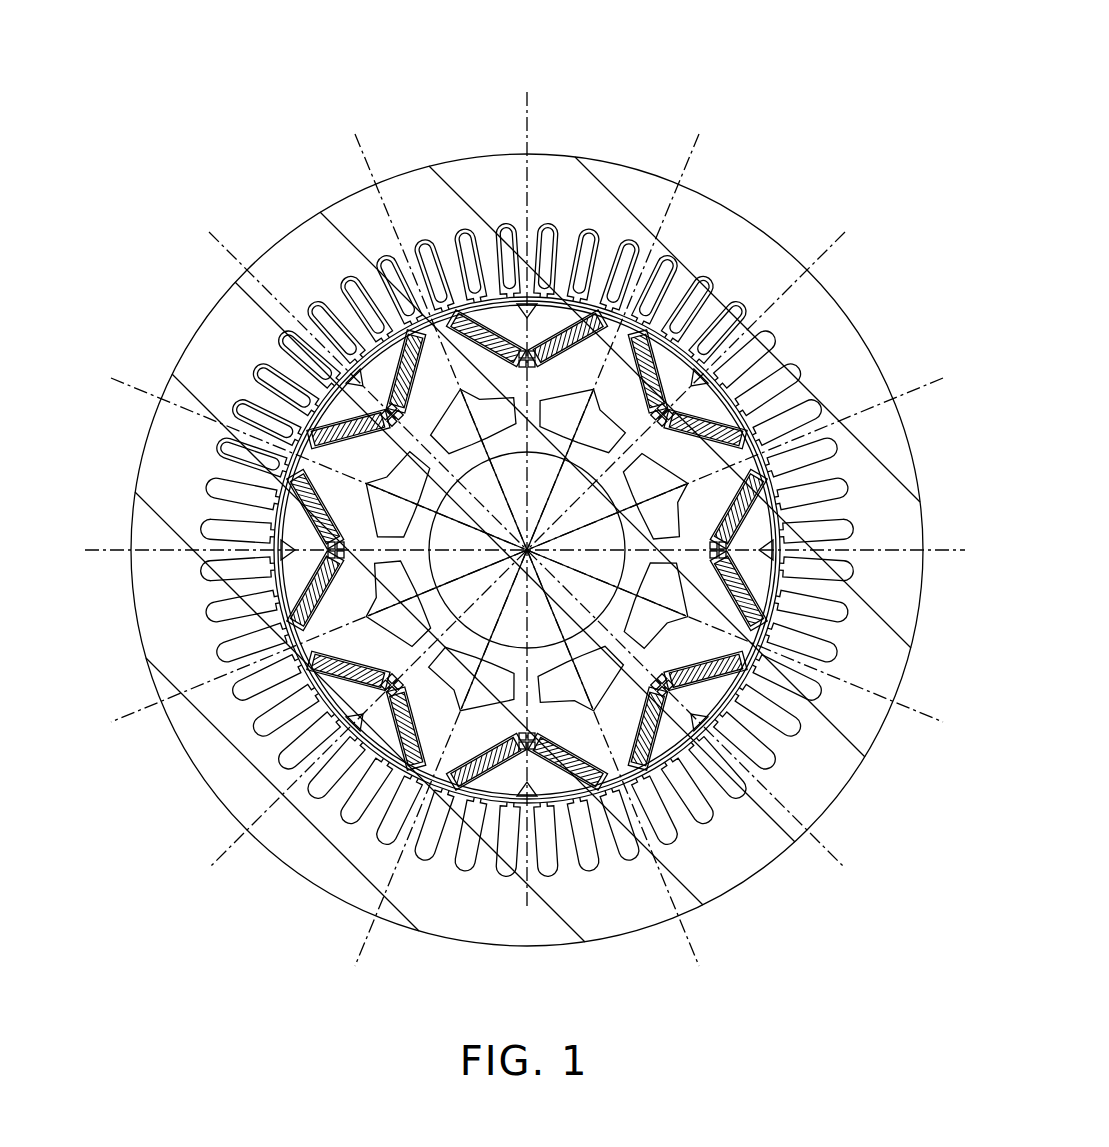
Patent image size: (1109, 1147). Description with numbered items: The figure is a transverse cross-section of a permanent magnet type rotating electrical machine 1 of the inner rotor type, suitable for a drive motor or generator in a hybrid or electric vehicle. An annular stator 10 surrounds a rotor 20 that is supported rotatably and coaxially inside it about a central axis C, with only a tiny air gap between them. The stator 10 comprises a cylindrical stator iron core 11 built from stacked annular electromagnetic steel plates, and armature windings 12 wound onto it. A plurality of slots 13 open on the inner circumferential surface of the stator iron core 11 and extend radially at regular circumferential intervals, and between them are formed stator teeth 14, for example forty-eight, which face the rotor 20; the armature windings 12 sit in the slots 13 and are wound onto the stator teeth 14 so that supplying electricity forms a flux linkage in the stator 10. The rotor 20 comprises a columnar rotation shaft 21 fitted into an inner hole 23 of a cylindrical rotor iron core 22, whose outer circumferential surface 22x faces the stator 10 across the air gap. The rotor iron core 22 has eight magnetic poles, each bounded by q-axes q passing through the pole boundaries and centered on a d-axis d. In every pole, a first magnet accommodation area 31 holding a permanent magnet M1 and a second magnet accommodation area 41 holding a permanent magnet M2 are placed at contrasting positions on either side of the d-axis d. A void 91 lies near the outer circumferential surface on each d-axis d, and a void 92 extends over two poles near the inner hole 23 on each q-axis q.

The rotating electrical machine 1 is at (638, 98).
The stator 10 is at (576, 152).
The stator iron core 11 is at (300, 248).
The armature winding 12 is at (448, 247).
The slot 13 is at (483, 253).
The stator tooth 14 is at (255, 397).
The rotor 20 is at (303, 660).
The rotation shaft 21 is at (612, 558).
The rotor iron core 22 is at (393, 903).
The outer circumferential surface 22x is at (235, 803).
The inner hole 23 is at (458, 655).
The first magnet accommodation area 31 is at (512, 364).
The second magnet accommodation area 41 is at (403, 408).
The void 91 is at (536, 315).
The void 92 is at (493, 467).
The permanent magnet M1 is at (486, 338).
The permanent magnet M2 is at (410, 374).
The central axis C is at (531, 554).
The d-axis d is at (523, 128).
The q-axis q is at (370, 160).